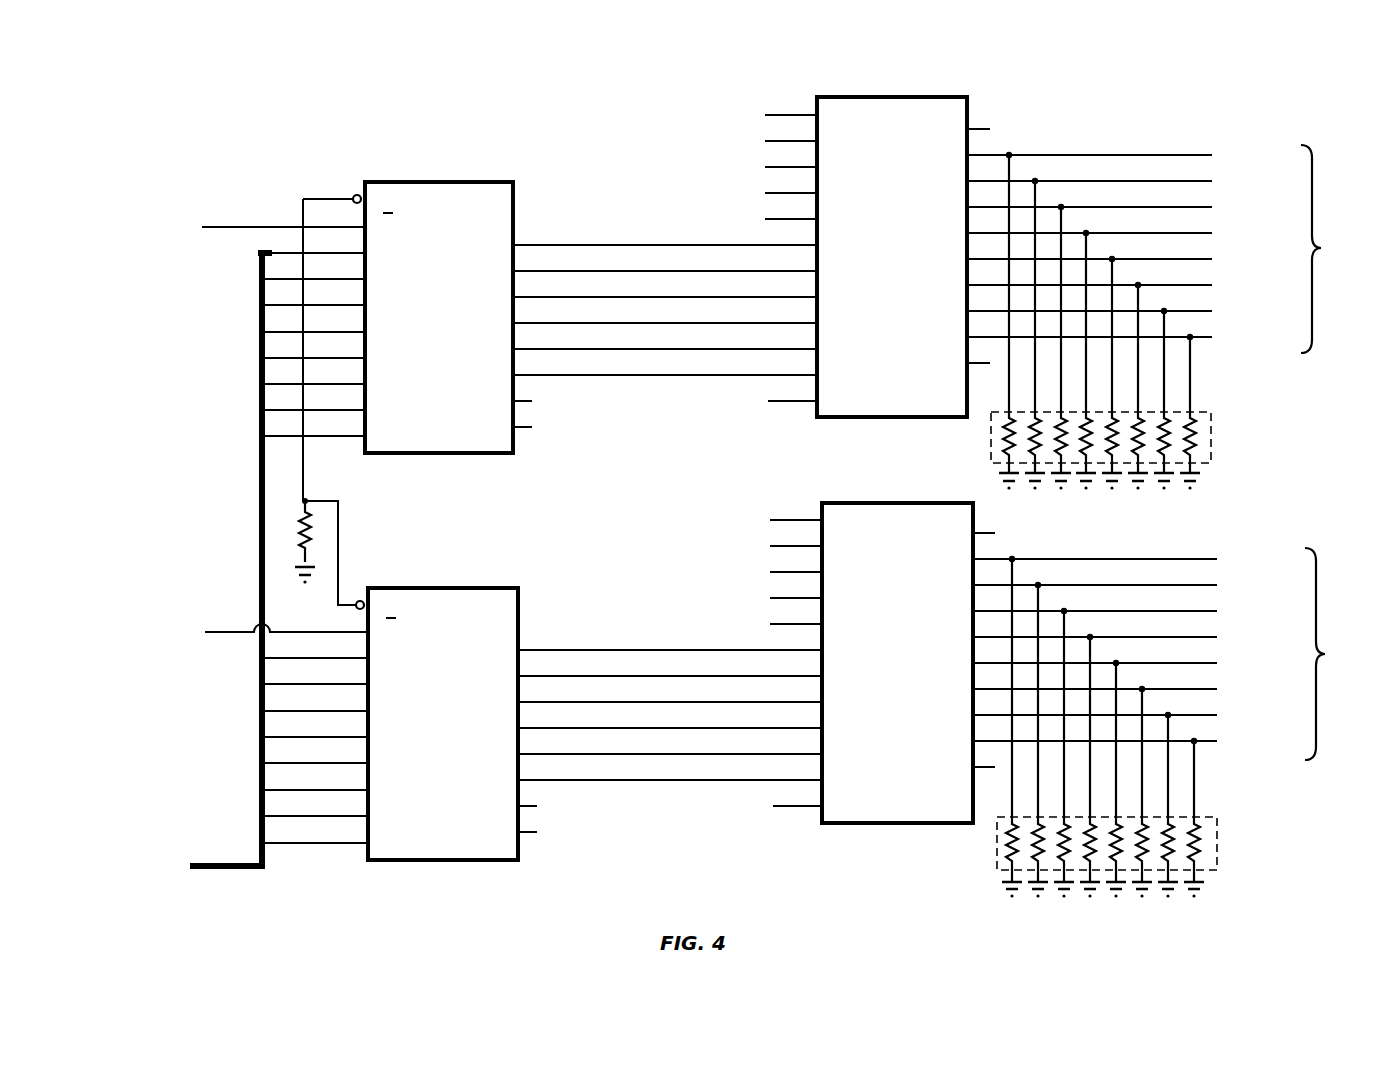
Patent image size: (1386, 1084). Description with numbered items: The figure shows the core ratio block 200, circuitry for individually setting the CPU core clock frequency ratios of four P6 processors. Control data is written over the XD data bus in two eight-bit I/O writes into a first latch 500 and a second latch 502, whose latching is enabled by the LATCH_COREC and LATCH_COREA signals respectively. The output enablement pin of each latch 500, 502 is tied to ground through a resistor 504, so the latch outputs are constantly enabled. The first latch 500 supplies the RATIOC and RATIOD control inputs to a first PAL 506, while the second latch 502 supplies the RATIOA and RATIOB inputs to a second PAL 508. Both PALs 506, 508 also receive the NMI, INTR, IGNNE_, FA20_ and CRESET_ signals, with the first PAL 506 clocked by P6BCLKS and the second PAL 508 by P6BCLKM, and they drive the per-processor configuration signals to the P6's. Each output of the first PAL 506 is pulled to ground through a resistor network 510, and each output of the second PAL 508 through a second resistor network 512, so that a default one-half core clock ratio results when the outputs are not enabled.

The core ratio block 200 is at (163, 163).
The first latch 500 is at (435, 860).
The second latch 502 is at (430, 455).
The resistor 504 is at (318, 527).
The first PAL 506 is at (885, 823).
The second PAL 508 is at (885, 417).
The resistor network 510 is at (1217, 840).
The second resistor network 512 is at (1212, 433).